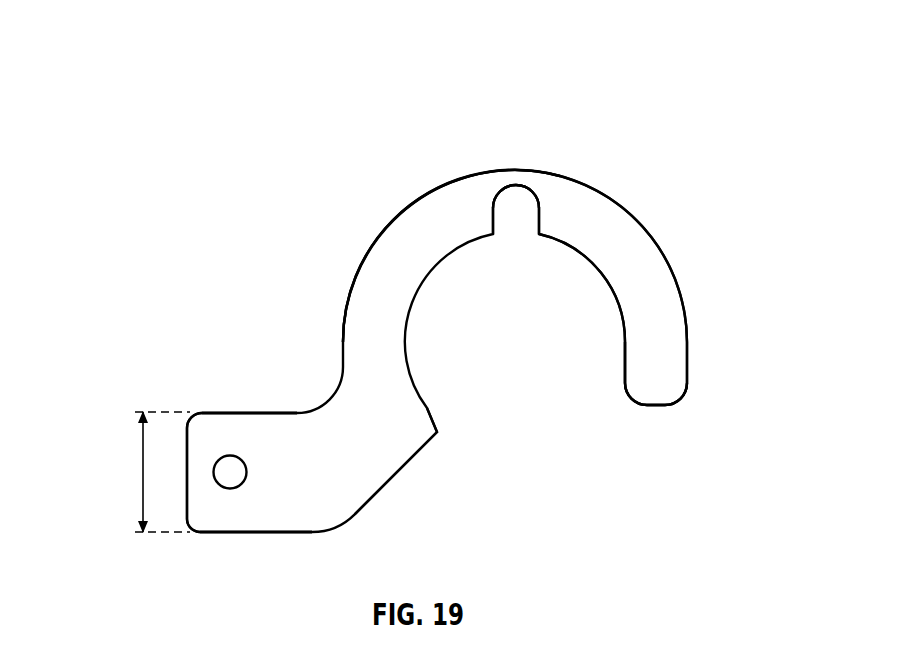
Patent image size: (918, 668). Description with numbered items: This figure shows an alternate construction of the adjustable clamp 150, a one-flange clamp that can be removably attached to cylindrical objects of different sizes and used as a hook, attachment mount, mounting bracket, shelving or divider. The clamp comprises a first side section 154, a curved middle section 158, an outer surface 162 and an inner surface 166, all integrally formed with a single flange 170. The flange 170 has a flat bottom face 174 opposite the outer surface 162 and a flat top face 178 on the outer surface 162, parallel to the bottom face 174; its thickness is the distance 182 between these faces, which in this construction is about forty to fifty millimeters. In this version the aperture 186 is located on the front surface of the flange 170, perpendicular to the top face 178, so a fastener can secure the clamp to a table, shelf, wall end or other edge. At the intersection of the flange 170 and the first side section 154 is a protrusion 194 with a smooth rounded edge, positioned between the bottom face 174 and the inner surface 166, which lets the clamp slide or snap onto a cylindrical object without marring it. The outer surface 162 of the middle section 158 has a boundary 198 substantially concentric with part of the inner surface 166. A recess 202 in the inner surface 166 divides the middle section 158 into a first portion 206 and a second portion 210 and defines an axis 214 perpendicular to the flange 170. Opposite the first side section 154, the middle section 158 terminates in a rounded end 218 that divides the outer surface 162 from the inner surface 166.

The adjustable clamp 150 is at (693, 77).
The first side section 154 is at (338, 332).
The middle section 158 is at (455, 178).
The outer surface 162 is at (510, 168).
The inner surface 166 is at (618, 312).
The flange 170 is at (227, 422).
The bottom face 174 is at (295, 533).
The top face 178 is at (280, 412).
The distance 182 is at (143, 470).
The aperture 186 is at (230, 488).
The protrusion 194 is at (437, 432).
The boundary 198 is at (357, 258).
The recess 202 is at (508, 220).
The first portion 206 is at (405, 200).
The second portion 210 is at (663, 207).
The axis 214 is at (513, 208).
The rounded end 218 is at (675, 402).